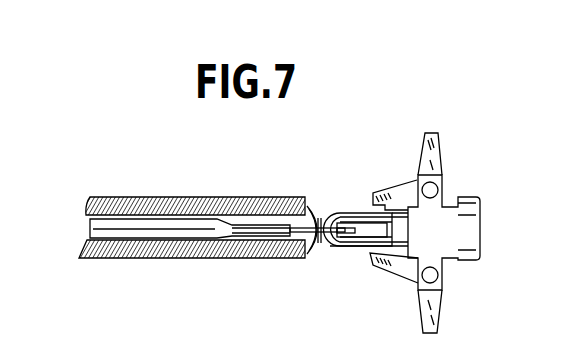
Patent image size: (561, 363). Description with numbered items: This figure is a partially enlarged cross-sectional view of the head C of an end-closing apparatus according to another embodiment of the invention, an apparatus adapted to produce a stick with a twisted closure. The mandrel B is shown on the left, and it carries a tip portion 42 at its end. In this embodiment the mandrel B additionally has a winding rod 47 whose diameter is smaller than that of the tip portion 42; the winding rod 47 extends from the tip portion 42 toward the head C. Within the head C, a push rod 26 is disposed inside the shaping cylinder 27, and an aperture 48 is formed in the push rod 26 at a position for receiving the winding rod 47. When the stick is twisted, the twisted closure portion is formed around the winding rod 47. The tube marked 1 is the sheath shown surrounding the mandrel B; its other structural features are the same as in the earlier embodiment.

The tube (sheath) 1 is at (175, 197).
The tip portion 42 is at (245, 198).
The winding rod 47 is at (318, 212).
The aperture 48 is at (347, 220).
The shaping cylinder 27 is at (340, 248).
The push rod 26 is at (375, 232).
The mandrel B is at (90, 218).
The head C is at (449, 194).